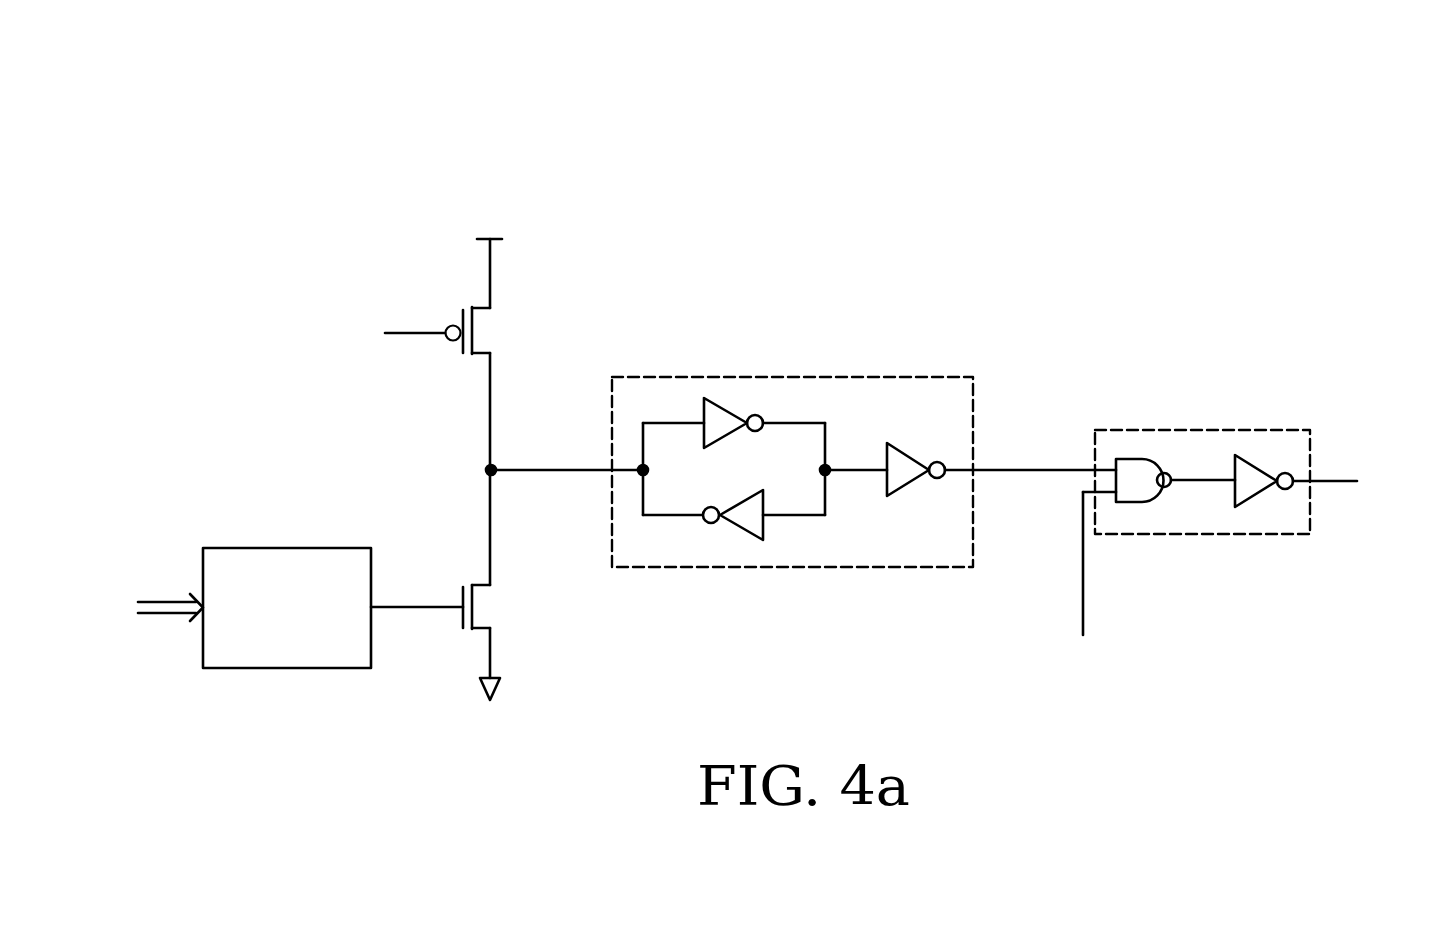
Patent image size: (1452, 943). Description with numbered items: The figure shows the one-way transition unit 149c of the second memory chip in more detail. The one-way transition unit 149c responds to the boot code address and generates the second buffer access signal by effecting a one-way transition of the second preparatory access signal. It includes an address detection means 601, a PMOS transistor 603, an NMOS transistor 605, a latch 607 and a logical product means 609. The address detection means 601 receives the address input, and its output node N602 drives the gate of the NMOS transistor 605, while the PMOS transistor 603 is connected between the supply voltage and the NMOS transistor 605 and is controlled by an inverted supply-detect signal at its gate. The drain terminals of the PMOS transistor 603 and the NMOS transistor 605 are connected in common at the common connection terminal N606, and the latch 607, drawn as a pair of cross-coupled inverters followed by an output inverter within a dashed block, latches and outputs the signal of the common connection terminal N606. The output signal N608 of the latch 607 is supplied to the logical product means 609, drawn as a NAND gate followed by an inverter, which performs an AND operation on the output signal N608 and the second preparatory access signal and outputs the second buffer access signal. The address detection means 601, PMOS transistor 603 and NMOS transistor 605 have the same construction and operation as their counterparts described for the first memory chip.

The one-way transition unit 149c is at (892, 165).
The address detection means 601 is at (298, 547).
The PMOS transistor 603 is at (485, 334).
The NMOS transistor 605 is at (485, 608).
The latch 607 is at (820, 377).
The logical product means 609 is at (1203, 430).
The node N602 is at (418, 608).
The common connection terminal N606 is at (548, 472).
The output signal of the latch N608 is at (1028, 467).